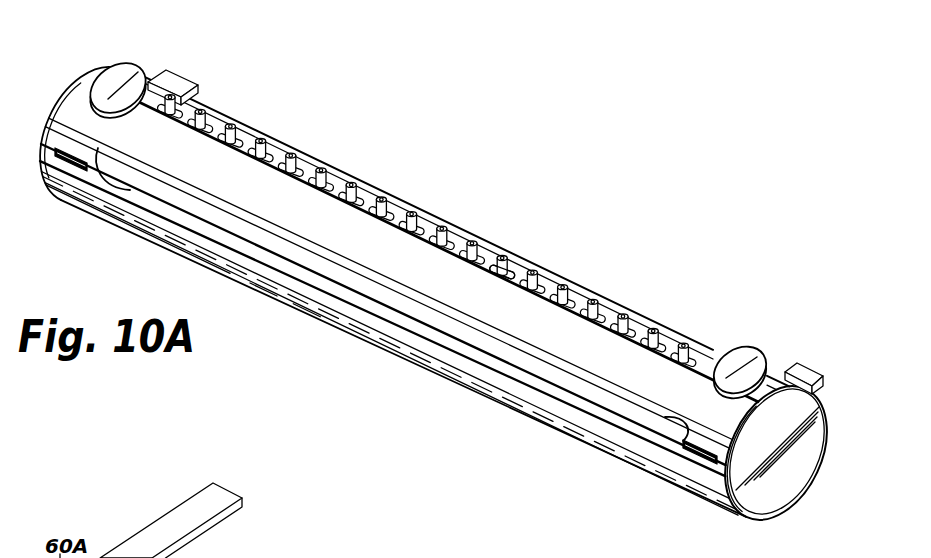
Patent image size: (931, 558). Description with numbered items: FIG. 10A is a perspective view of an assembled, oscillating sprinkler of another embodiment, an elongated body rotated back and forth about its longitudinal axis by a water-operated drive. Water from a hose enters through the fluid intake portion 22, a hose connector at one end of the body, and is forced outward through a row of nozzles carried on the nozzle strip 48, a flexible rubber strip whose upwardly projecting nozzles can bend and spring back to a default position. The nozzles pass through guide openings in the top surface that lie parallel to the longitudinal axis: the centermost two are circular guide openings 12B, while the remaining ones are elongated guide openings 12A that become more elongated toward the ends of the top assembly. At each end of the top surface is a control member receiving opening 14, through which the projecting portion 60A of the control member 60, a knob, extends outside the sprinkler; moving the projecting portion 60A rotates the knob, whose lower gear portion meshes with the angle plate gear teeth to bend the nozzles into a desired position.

The control member receiving opening 14 is at (217, 115).
The elongated guide openings 12A is at (640, 318).
The circular guide openings 12B is at (448, 234).
The nozzle strip 48 is at (512, 264).
The fluid intake portion 22 is at (712, 498).
The control member 60 is at (750, 338).
The projecting portion 60A is at (126, 80).